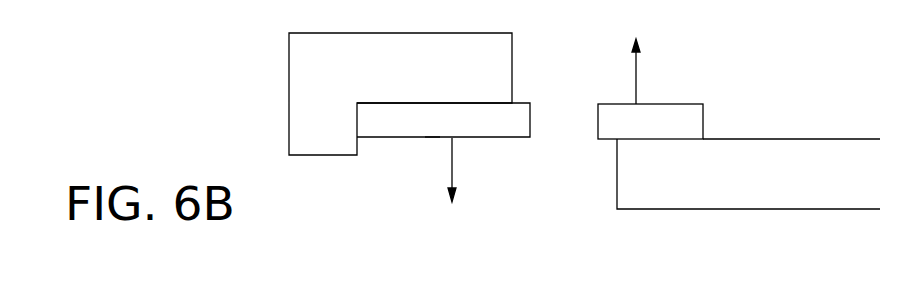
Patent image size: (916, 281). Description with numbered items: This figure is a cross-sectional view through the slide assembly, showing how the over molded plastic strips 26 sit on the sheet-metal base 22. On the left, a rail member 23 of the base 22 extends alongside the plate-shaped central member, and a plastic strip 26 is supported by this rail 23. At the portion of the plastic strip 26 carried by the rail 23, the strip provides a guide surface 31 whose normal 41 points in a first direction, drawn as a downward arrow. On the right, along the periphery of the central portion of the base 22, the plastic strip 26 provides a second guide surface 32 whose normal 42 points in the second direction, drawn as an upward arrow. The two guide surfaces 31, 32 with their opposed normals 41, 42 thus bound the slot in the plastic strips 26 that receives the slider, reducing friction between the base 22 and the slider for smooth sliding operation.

The base 22 is at (787, 185).
The rail member 23 is at (300, 87).
The plastic strip 26 is at (517, 125).
The guide surface 31 is at (433, 138).
The guide surface 32 is at (647, 105).
The normal 41 is at (452, 170).
The normal 42 is at (633, 75).